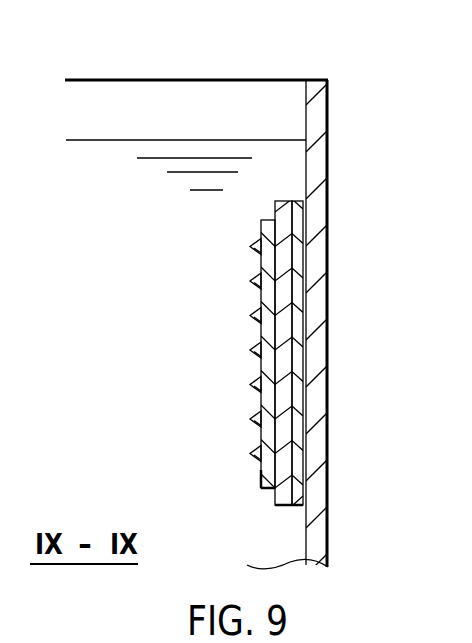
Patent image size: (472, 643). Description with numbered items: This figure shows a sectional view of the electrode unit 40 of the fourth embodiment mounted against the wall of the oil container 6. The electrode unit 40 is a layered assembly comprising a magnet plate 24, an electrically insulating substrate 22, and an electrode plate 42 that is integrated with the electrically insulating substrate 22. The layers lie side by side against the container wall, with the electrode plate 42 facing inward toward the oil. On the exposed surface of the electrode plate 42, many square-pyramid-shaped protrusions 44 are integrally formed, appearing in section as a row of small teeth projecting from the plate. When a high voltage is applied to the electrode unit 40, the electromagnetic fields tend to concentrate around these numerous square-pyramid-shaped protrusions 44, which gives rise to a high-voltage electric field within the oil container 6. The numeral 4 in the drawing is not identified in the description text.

The tank 4 is at (110, 178).
The oil container 6 is at (315, 163).
The electrically insulating substrate 22 is at (290, 318).
The magnet plate 24 is at (307, 250).
The electrode unit 40 is at (241, 351).
The electrode plate 42 is at (268, 375).
The square-pyramid-shaped protrusions 44 is at (255, 280).